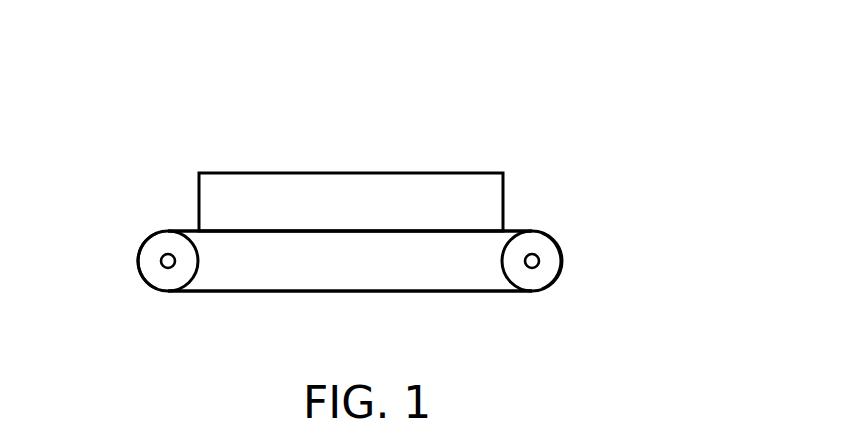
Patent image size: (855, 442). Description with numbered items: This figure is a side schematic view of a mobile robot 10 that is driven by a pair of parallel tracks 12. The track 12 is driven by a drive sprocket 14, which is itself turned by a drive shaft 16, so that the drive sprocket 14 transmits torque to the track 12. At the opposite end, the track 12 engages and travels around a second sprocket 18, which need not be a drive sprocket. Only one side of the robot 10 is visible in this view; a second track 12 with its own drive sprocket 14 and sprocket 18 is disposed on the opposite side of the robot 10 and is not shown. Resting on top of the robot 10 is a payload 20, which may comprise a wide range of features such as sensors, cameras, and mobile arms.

The mobile robot 10 is at (556, 124).
The track 12 is at (338, 292).
The drive sprocket 14 is at (167, 273).
The drive shaft 16 is at (160, 259).
The second sprocket 18 is at (550, 260).
The payload 20 is at (375, 192).